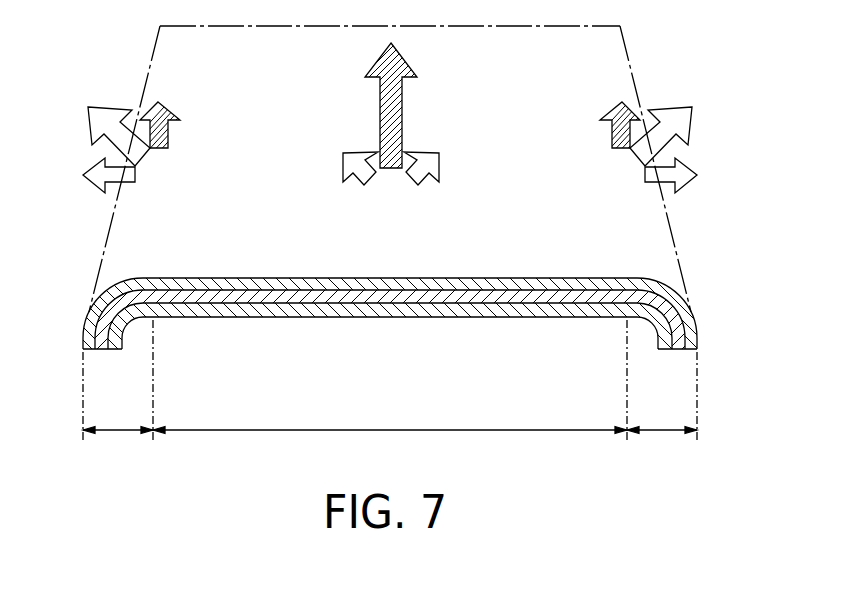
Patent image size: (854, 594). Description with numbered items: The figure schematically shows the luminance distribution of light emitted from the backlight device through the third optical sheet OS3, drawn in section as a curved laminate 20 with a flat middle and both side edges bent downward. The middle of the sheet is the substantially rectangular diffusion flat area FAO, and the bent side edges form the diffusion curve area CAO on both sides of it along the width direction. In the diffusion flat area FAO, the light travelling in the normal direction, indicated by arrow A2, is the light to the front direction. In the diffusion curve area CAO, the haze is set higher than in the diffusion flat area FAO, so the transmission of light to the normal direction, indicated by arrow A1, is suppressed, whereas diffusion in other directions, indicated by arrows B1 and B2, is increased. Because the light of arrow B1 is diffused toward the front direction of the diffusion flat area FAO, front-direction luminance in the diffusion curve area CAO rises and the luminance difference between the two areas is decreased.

The housing (laminated cover member) 20 is at (387, 333).
The third optical sheet OS3 is at (200, 278).
The arrow indicating light to the normal direction in the diffusion curve area A1 is at (98, 121).
The arrow indicating light to the normal direction in the diffusion flat area A2 is at (403, 98).
The arrow indicating diffused light to the front direction B1 is at (157, 105).
The arrow indicating diffused light in a non-normal direction B2 is at (93, 180).
The diffusion curve area CAO is at (390, 381).
The diffusion flat area FAO is at (390, 417).